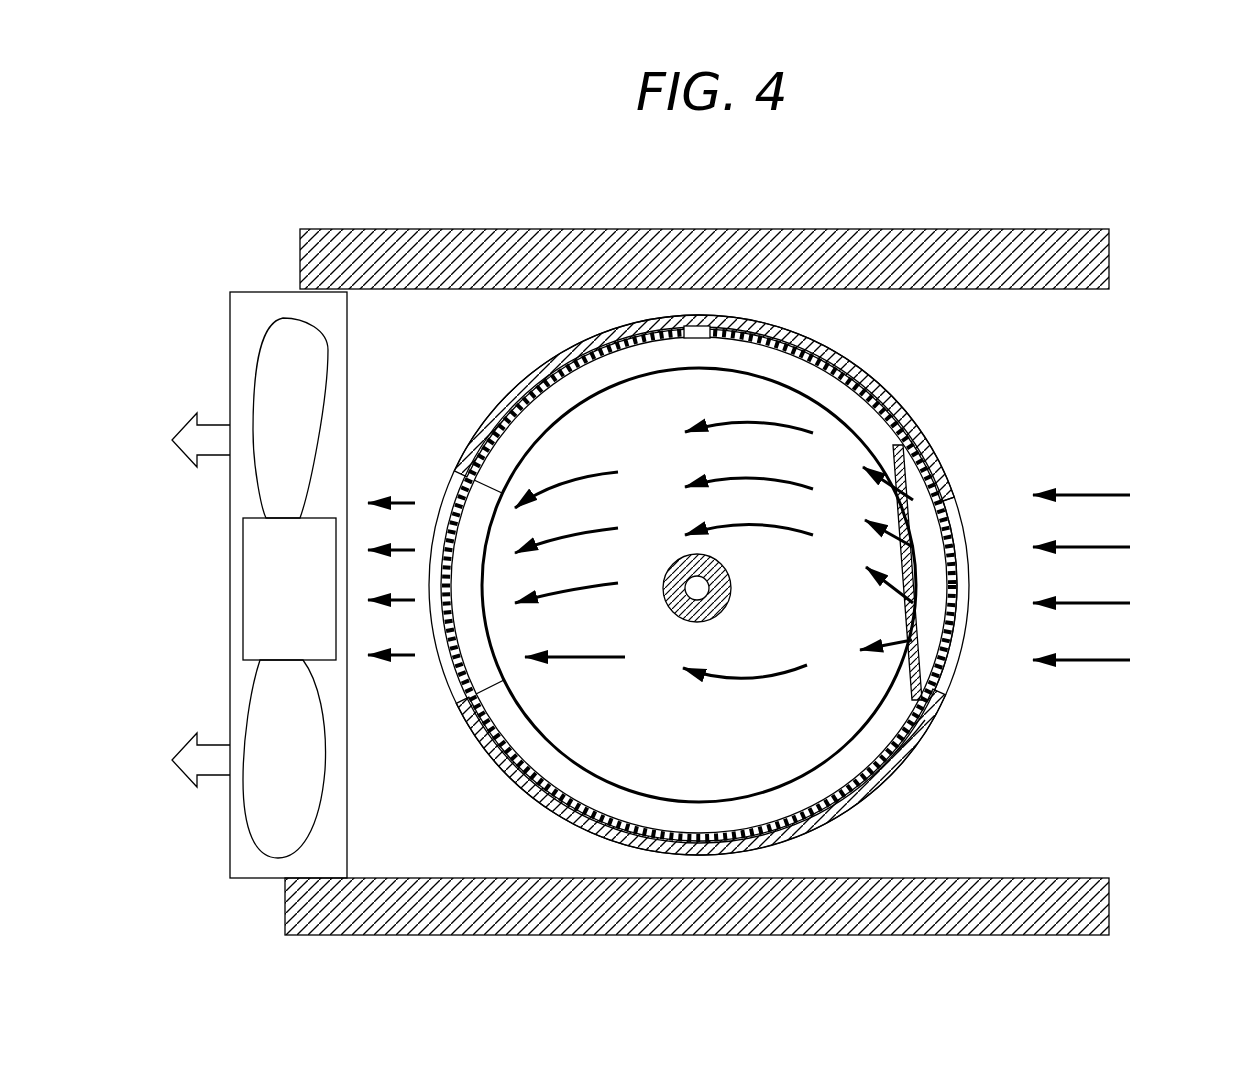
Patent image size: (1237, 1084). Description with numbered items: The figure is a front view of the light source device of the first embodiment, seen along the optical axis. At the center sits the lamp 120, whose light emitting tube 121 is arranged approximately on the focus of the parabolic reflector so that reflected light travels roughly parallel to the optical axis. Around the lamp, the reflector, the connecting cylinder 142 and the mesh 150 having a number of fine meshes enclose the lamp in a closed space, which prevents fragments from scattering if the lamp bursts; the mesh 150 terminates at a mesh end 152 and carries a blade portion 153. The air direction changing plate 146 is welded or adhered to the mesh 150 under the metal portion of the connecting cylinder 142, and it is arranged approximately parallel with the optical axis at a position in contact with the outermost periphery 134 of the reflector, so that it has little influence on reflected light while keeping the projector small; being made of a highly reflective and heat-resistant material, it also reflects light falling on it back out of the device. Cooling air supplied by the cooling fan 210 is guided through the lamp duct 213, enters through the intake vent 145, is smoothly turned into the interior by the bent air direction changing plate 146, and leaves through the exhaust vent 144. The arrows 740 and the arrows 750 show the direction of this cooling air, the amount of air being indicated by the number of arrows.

The lamp 120 is at (700, 590).
The light emitting tube 121 is at (680, 605).
The outermost periphery of a reflector 134 is at (505, 678).
The connecting cylinder 142 is at (915, 338).
The exhaust vent 144 is at (448, 510).
The intake vent 145 is at (958, 580).
The air direction changing plate 146 is at (955, 495).
The mesh 150 is at (945, 650).
The mesh end 152 is at (698, 340).
The blade portion 153 is at (922, 578).
The cooling fan 210 is at (287, 372).
The lamp duct 213 is at (1105, 255).
The arrows showing direction and amount of cooling air 740 is at (1090, 490).
The arrows showing direction and amount of cooling air 750 is at (893, 755).